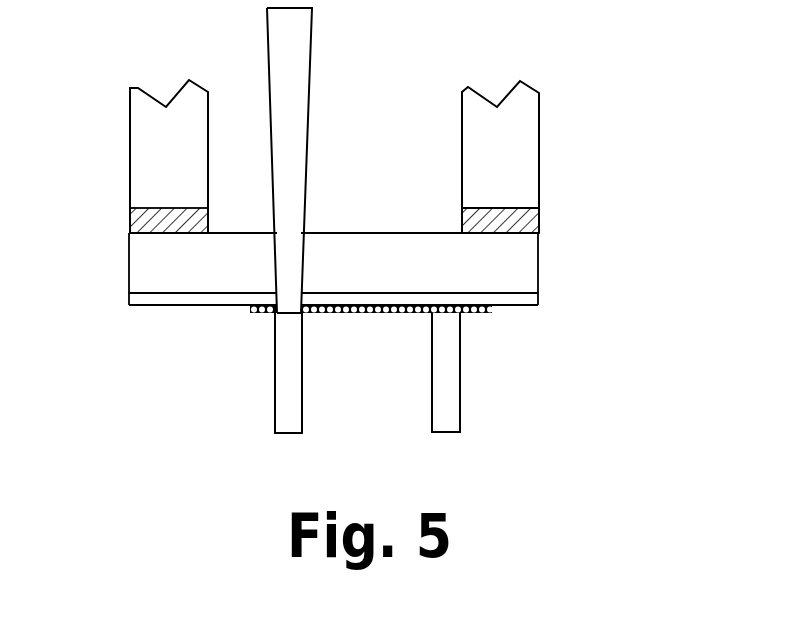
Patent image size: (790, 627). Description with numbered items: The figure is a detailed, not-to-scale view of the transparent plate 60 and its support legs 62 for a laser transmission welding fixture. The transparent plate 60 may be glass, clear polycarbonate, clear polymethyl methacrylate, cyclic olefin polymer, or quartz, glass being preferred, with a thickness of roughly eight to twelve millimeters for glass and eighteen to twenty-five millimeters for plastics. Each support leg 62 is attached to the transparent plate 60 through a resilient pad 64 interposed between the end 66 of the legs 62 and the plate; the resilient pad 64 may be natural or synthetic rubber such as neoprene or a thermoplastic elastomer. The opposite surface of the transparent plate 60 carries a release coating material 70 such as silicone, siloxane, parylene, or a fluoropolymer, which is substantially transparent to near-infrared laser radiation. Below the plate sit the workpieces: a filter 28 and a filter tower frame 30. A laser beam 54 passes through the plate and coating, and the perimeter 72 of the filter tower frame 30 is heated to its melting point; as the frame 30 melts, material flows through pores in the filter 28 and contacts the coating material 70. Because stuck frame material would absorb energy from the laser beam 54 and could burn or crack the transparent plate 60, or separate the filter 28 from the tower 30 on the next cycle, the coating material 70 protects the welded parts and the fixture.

The filter 28 is at (472, 316).
The filter tower frame 30 is at (285, 375).
The laser beam 54 is at (290, 85).
The transparent plate 60 is at (388, 276).
The support legs 62 is at (148, 157).
The resilient pad 64 is at (526, 220).
The end of legs 66 is at (460, 207).
The release coating material 70 is at (523, 298).
The perimeter 72 is at (270, 315).